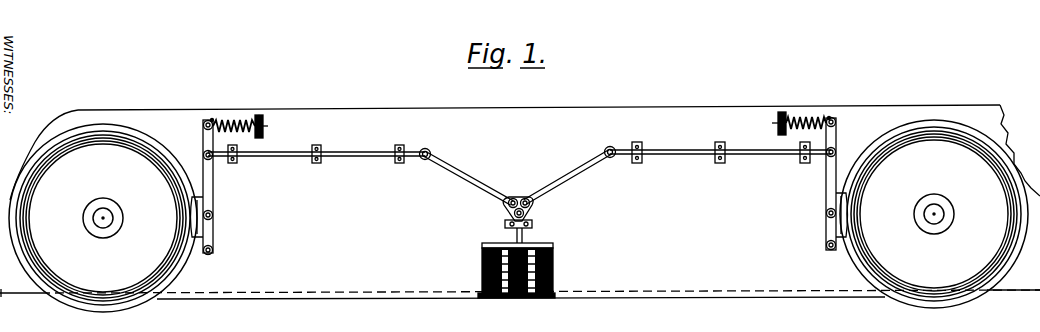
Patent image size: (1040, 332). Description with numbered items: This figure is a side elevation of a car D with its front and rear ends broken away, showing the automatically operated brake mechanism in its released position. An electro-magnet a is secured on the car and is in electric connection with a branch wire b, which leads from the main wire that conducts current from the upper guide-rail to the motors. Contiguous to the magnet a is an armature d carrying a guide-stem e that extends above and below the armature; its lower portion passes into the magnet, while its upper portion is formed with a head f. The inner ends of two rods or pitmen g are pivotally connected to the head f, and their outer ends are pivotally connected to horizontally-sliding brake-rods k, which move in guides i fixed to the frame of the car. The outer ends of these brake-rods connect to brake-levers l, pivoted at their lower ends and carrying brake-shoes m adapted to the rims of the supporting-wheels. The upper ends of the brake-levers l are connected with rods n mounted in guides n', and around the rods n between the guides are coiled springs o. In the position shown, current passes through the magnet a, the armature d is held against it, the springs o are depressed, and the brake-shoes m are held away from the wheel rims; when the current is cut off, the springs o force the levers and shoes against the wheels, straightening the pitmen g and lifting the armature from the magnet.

The car D is at (525, 173).
The electro-magnet a is at (527, 270).
The branch wire b is at (30, 294).
The armature d is at (530, 238).
The guide-stem e is at (518, 234).
The head f is at (518, 198).
The rods or pitmen g is at (518, 177).
The guides i is at (323, 160).
The horizontal brake rods k is at (519, 146).
The brake-levers l is at (212, 183).
The brake-shoes m is at (216, 230).
The rods n is at (520, 126).
The guides n' is at (516, 101).
The coiled springs o is at (236, 133).